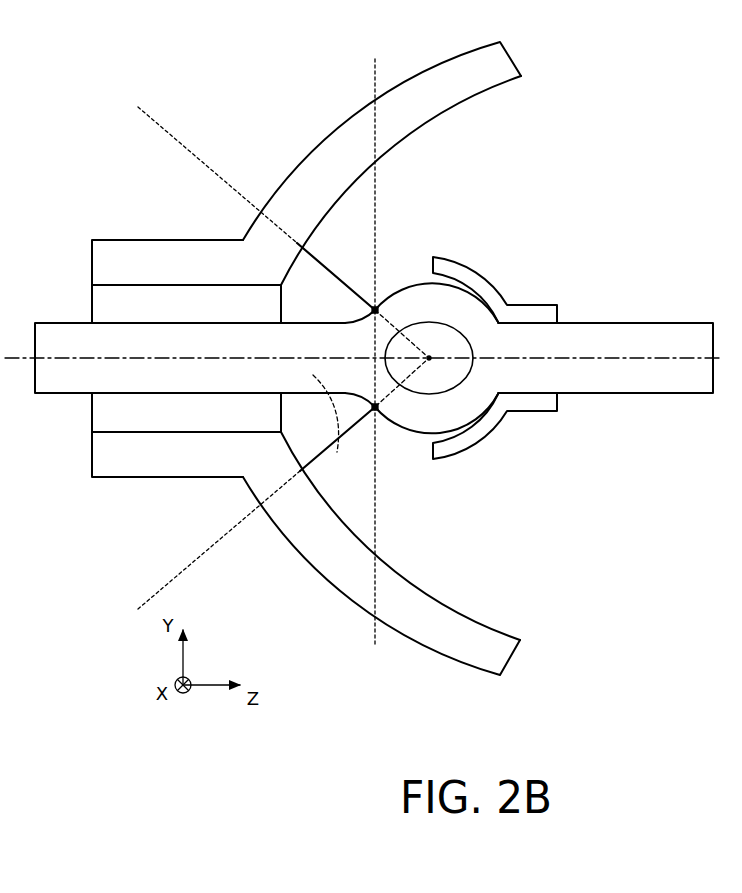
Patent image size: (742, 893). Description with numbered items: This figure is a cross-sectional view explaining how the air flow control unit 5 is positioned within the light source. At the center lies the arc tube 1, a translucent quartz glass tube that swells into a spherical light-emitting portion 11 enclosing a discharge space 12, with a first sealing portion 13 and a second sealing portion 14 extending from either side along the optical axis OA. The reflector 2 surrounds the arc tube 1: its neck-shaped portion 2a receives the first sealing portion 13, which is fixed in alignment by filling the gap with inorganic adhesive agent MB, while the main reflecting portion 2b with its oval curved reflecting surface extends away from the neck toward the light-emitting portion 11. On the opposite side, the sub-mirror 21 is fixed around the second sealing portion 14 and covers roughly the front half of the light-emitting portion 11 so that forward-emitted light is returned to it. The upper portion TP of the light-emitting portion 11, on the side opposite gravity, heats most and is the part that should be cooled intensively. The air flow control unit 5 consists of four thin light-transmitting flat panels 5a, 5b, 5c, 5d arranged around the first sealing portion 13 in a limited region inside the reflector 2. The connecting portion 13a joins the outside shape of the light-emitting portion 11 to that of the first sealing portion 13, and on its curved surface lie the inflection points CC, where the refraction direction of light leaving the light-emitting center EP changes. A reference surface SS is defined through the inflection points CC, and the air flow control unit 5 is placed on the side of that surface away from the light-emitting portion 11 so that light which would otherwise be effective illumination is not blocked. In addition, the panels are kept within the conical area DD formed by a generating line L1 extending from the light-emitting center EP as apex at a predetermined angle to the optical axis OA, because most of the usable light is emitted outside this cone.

The arc tube 1 is at (397, 352).
The light-emitting portion 11 is at (425, 420).
The discharge space 12 is at (423, 333).
The first sealing portion 13 is at (55, 380).
The connecting portion 13a is at (368, 308).
The second sealing portion 14 is at (650, 325).
The reflector 2 is at (304, 353).
The neck-shaped portion 2a is at (128, 252).
The main reflecting portion 2b is at (338, 360).
The sub-mirror 21 is at (533, 312).
The air flow control unit 5 is at (322, 248).
The flat panel 5a is at (338, 180).
The flat panel 5b is at (308, 277).
The flat panel 5c is at (375, 536).
The flat panel 5d is at (298, 437).
The inflection points CC is at (374, 307).
The conical area DD is at (332, 425).
The light-emitting center EP is at (420, 395).
The generating line L1 is at (188, 143).
The inorganic adhesive agent MB is at (200, 295).
The optical axis OA is at (587, 355).
The reference surface SS is at (372, 80).
The upper portion TP is at (427, 283).